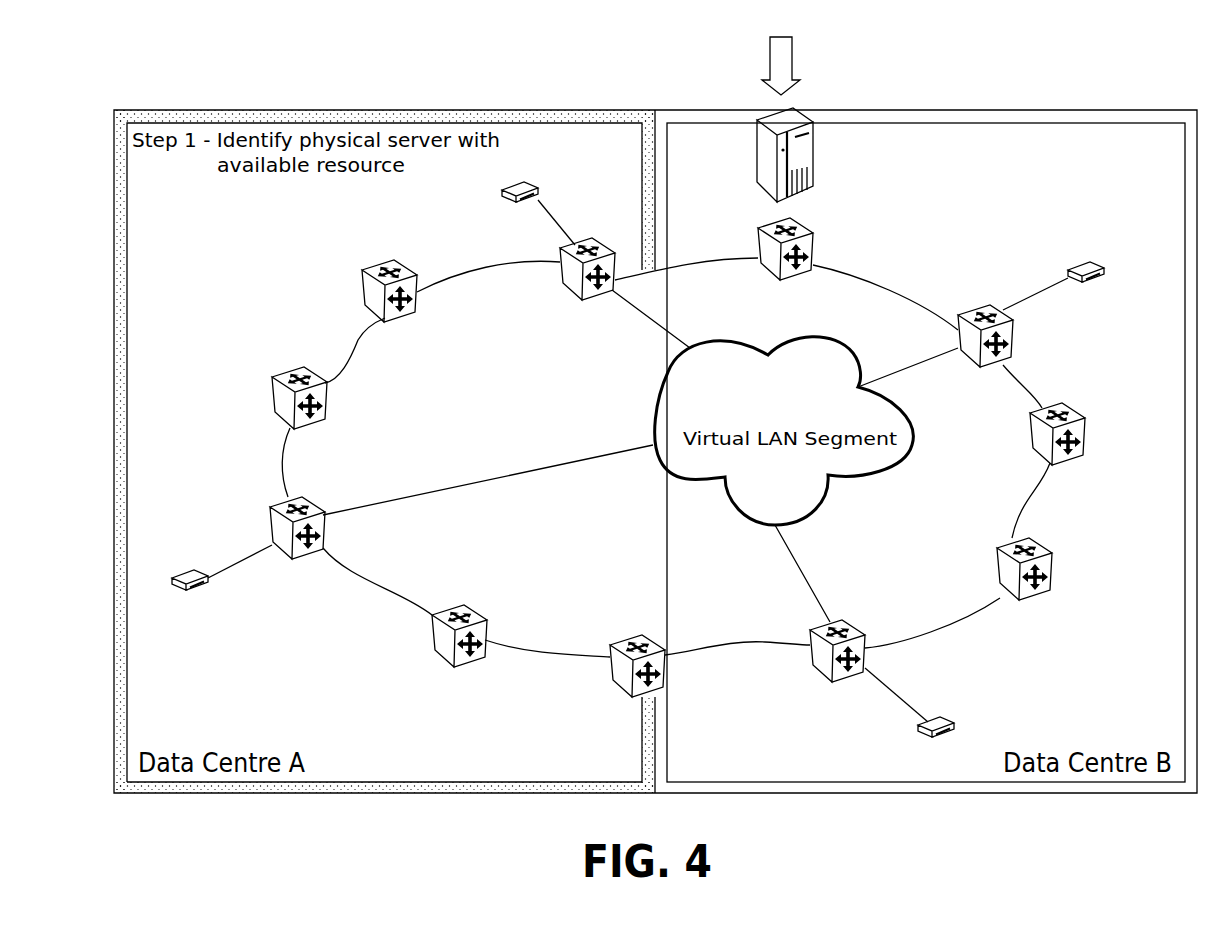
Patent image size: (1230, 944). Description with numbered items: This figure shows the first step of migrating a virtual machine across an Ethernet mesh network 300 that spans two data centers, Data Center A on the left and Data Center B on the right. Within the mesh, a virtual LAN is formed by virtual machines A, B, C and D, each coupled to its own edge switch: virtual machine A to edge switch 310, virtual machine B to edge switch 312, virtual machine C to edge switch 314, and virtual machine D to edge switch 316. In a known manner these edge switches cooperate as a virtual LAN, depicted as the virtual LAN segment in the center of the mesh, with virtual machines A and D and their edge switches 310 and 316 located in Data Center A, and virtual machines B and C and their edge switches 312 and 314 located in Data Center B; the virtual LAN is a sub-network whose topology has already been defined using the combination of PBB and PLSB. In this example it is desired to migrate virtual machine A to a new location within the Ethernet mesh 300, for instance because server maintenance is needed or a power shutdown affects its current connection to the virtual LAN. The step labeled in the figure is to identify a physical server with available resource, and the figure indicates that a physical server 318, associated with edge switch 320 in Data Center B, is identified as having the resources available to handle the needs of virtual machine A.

The Ethernet mesh network 300 is at (490, 402).
The edge switch 310 is at (302, 558).
The edge switch 312 is at (815, 672).
The edge switch 314 is at (1012, 343).
The edge switch 316 is at (590, 240).
The physical server 318 is at (813, 158).
The edge switch 320 is at (813, 250).
The virtual machine A is at (185, 570).
The virtual machine B is at (952, 720).
The virtual machine C is at (1105, 275).
The virtual machine D is at (518, 180).